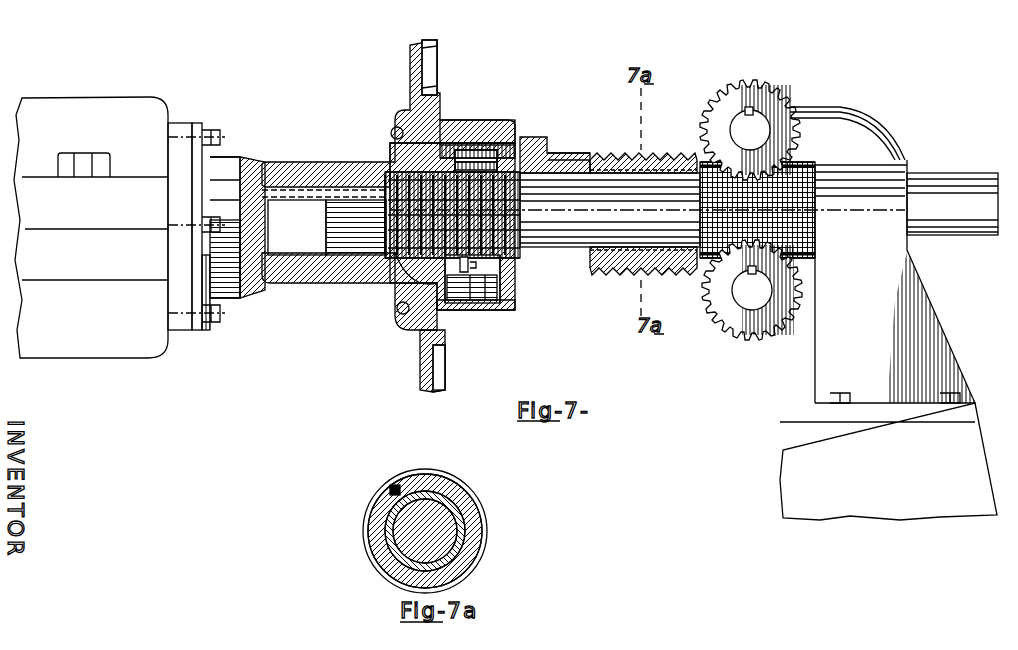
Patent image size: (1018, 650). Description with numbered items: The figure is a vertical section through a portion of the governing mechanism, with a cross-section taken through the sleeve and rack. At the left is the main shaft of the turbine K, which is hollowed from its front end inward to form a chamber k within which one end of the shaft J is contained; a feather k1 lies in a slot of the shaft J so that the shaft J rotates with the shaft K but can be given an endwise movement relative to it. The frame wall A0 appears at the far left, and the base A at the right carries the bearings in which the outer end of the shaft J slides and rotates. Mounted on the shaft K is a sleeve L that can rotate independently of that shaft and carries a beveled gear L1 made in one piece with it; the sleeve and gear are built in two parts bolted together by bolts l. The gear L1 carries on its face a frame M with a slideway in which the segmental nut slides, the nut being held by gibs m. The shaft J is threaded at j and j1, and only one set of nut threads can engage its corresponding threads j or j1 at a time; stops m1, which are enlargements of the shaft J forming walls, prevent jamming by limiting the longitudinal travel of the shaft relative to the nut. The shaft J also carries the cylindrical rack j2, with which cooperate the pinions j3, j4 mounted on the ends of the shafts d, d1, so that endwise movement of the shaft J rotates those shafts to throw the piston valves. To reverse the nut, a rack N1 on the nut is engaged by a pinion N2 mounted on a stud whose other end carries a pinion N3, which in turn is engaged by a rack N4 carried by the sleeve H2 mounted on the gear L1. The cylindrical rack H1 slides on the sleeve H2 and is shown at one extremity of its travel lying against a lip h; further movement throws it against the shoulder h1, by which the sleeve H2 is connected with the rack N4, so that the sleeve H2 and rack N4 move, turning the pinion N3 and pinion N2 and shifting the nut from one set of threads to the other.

In FIG. 7, the base A is at (888, 461).
In FIG. 7, the frame wall A0 is at (91, 227).
In FIG. 7, the main shaft of the turbine K is at (258, 163).
In FIG. 7, the sleeve L is at (308, 165).
In FIG. 7, the beveled gear L1 is at (430, 42).
In FIG. 7, the bolts l is at (396, 127).
In FIG. 7, the chamber k is at (324, 222).
In FIG. 7, the feather k1 is at (316, 230).
In FIG. 7, the rack N1 is at (378, 160).
In FIG. 7, the pinion N2 is at (520, 143).
In FIG. 7, the pinion N3 is at (466, 148).
In FIG. 7, the rack N4 is at (496, 138).
In FIG. 7a, the rack N4 is at (395, 484).
In FIG. 7, the threads j is at (405, 290).
In FIG. 7, the threads j1 is at (556, 250).
In FIG. 7, the cylindrical rack j2 is at (810, 228).
In FIG. 7, the pinion j3 is at (763, 100).
In FIG. 7, the pinion j4 is at (750, 338).
In FIG. 7, the frame M is at (405, 340).
In FIG. 7, the gibs m is at (465, 312).
In FIG. 7, the stops m1 is at (478, 302).
In FIG. 7, the lip h is at (718, 150).
In FIG. 7, the shoulder h1 is at (552, 152).
In FIG. 7, the cylindrical rack H1 is at (657, 152).
In FIG. 7a, the cylindrical rack H1 is at (478, 512).
In FIG. 7, the sleeve H2 is at (590, 258).
In FIG. 7a, the sleeve H2 is at (460, 500).
In FIG. 7, the shaft d is at (770, 122).
In FIG. 7, the shaft d1 is at (748, 292).
In FIG. 7, the shaft J is at (952, 204).